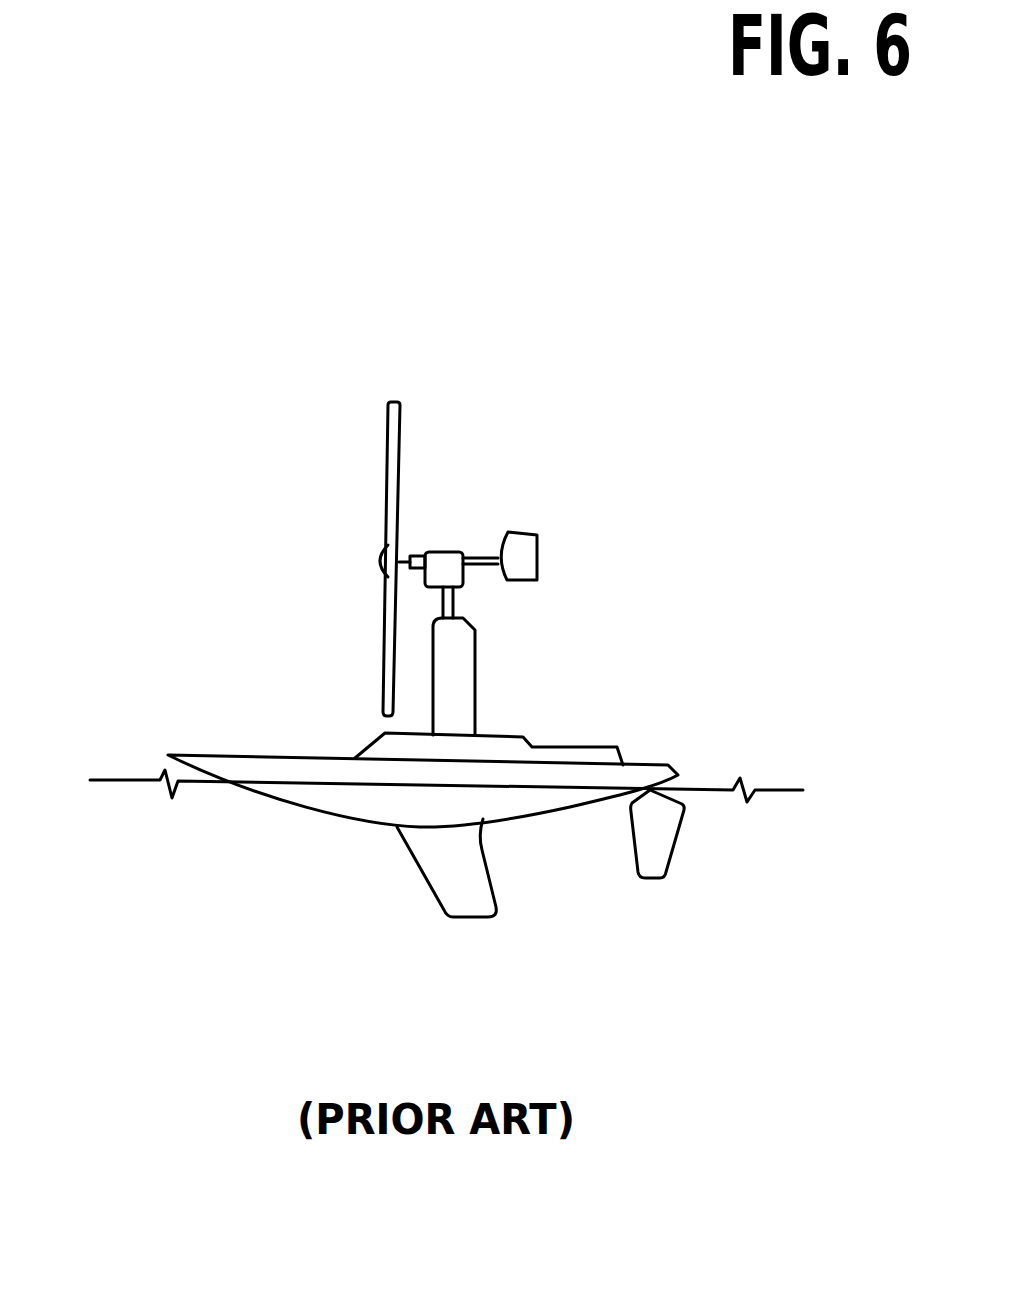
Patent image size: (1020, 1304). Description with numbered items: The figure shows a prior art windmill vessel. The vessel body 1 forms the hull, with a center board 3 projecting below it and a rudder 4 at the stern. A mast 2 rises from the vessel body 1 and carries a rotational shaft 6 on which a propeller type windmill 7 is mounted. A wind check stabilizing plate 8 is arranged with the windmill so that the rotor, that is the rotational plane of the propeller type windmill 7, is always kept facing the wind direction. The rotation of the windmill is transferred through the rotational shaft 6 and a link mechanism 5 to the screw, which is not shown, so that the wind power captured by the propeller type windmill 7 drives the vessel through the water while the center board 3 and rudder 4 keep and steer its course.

The vessel body 1 is at (262, 799).
The mast 2 is at (475, 698).
The center board 3 is at (427, 883).
The rudder 4 is at (673, 852).
The link mechanism 5 is at (450, 553).
The rotational shaft 6 is at (398, 560).
The propeller type windmill 7 is at (383, 662).
The wind check stabilizing plate 8 is at (537, 548).